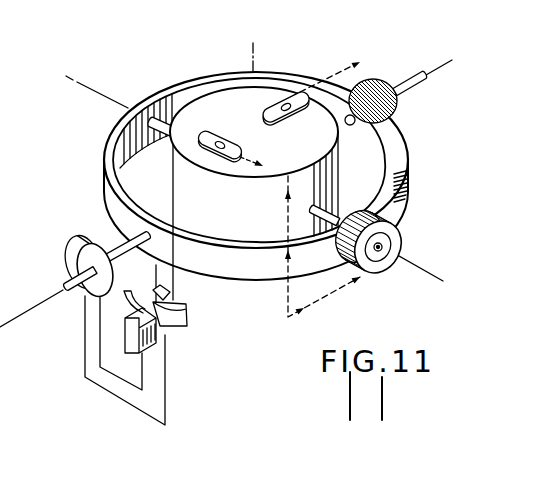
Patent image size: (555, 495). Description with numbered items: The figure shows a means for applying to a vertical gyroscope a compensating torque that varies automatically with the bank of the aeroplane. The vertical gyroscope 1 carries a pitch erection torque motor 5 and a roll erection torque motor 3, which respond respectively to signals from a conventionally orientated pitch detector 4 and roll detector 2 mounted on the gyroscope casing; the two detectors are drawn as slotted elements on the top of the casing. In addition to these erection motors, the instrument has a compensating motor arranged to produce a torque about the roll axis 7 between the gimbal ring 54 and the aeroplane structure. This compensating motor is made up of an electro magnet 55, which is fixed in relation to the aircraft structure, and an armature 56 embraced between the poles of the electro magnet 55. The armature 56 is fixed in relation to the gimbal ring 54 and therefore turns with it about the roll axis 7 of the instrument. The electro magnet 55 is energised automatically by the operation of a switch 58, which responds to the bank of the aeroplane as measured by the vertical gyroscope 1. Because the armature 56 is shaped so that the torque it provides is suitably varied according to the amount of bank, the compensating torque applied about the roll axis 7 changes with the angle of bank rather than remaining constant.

The vertical gyroscope 1 is at (237, 125).
The roll detector 2 is at (203, 141).
The roll erection torque motor 3 is at (397, 248).
The pitch detector 4 is at (288, 100).
The pitch erection torque motor 5 is at (381, 90).
The roll axis 7 is at (44, 300).
The gimbal ring 54 is at (402, 152).
The electro magnet 55 is at (125, 336).
The armature 56 is at (186, 315).
The switch 58 is at (86, 243).